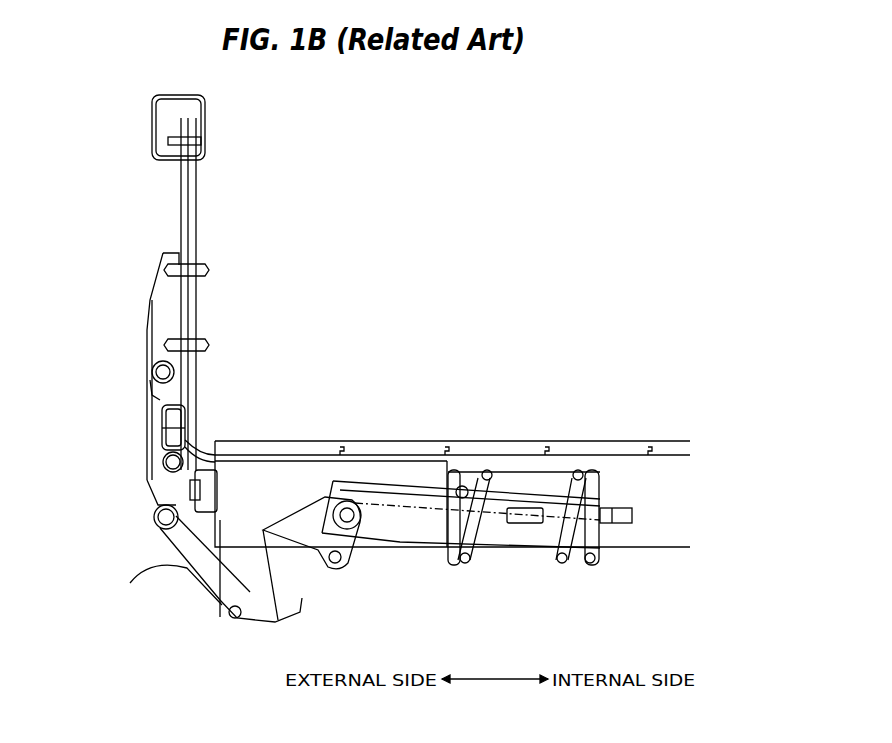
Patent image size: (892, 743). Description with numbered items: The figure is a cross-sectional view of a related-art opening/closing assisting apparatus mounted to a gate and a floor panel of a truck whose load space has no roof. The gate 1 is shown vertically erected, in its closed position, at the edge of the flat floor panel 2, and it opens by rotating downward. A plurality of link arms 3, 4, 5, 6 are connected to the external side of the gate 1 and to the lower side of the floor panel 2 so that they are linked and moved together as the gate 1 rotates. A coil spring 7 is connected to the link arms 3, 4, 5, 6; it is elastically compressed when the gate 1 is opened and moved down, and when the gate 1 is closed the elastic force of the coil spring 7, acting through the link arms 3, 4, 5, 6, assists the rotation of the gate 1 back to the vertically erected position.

The gate 1 is at (195, 212).
The floor panel 2 is at (424, 450).
The link arm 3 is at (152, 413).
The link arm 4 is at (160, 568).
The link arm 5 is at (283, 552).
The link arm 6 is at (393, 497).
The coil spring 7 is at (560, 545).